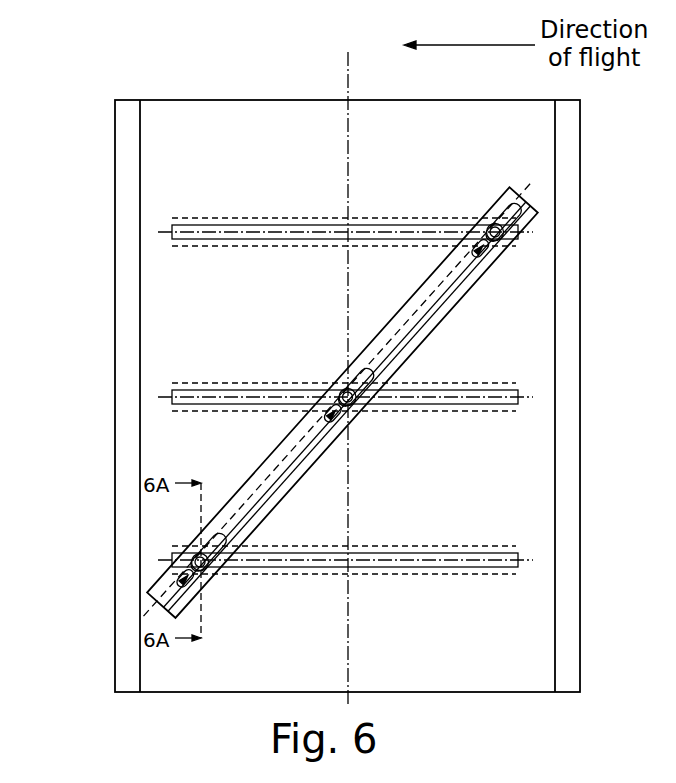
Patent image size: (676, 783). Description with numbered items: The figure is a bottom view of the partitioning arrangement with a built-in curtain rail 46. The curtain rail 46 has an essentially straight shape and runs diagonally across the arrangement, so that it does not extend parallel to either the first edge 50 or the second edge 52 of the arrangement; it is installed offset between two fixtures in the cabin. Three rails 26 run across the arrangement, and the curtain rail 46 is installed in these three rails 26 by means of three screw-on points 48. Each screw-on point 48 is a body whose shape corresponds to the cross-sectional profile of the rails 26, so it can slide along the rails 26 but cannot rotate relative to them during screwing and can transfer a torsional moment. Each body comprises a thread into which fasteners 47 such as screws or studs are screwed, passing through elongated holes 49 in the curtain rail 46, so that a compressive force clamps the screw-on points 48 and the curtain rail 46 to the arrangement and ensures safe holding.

The rail 26 is at (183, 218).
The curtain rail 46 is at (270, 480).
The fasteners 47 is at (197, 552).
The screw-on point 48 is at (165, 603).
The elongated holes 49 is at (210, 556).
The first edge of the arrangement according to the invention 50 is at (114, 557).
The second edge of the arrangement according to the invention 52 is at (185, 100).